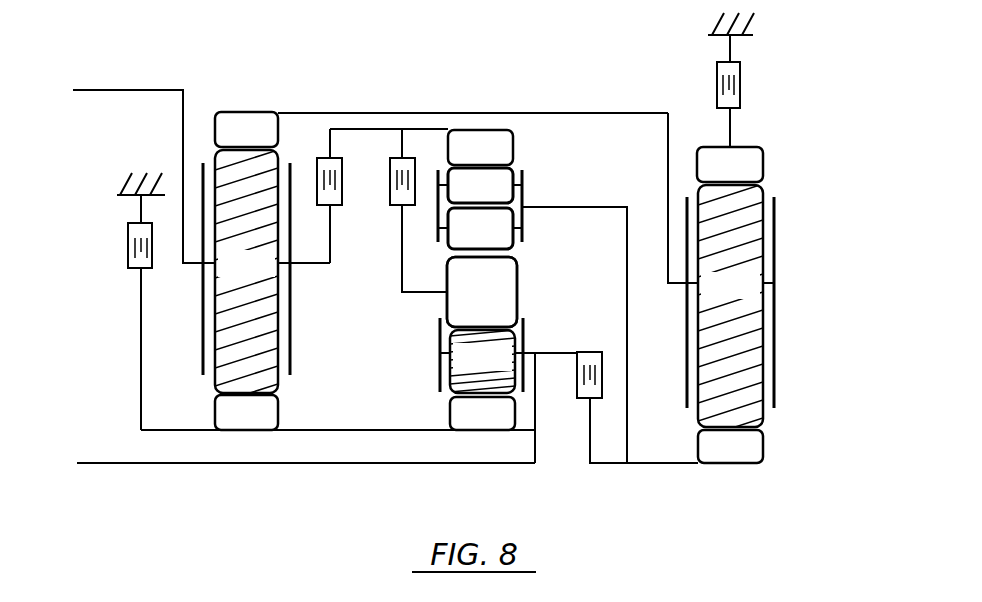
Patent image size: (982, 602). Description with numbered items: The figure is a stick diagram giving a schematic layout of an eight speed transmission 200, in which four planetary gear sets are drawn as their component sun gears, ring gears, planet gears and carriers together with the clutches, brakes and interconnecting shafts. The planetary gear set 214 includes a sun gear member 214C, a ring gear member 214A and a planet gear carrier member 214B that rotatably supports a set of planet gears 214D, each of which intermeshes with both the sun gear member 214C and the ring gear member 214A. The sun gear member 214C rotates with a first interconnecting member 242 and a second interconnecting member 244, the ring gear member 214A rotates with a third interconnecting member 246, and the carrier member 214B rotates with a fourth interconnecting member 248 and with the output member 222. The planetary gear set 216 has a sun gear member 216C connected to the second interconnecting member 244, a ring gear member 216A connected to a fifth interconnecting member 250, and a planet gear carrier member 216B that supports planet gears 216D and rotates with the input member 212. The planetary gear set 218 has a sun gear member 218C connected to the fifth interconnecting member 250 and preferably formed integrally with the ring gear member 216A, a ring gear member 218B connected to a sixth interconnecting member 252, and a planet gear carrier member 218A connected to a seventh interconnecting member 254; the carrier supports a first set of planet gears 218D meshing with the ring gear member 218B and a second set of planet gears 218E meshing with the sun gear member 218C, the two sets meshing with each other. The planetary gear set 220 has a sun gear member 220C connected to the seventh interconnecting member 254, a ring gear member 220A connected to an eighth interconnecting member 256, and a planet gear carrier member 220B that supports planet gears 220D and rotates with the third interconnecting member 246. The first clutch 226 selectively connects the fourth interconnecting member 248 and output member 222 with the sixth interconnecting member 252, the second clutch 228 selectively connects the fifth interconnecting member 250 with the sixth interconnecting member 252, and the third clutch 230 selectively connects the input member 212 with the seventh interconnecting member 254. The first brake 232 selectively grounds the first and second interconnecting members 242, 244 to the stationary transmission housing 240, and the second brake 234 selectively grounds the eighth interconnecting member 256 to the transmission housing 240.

The eight speed transmission 200 is at (560, 100).
The input member 212 is at (153, 464).
The planetary gear set 214 is at (286, 234).
The ring gear member 214A is at (222, 141).
The planet gear carrier member 214B is at (292, 372).
The sun gear member 214C is at (222, 424).
The planet gears 214D is at (222, 275).
The planetary gear set 216 is at (479, 409).
The ring gear member 216A is at (510, 318).
The planet gear carrier member 216B is at (438, 368).
The sun gear member 216C is at (458, 425).
The planet gears 216D is at (458, 369).
The planetary gear set 218 is at (520, 187).
The planet gear carrier member 218A is at (524, 172).
The ring gear member 218B is at (505, 159).
The sun gear member 218C is at (510, 288).
The first set of planet gears 218D is at (505, 197).
The second set of planet gears 218E is at (505, 240).
The planetary gear set 220 is at (764, 288).
The ring gear member 220A is at (704, 176).
The planet gear carrier member 220B is at (778, 317).
The sun gear member 220C is at (704, 458).
The planet gears 220D is at (704, 297).
The output member 222 is at (150, 90).
The first clutch 226 is at (334, 206).
The second clutch 228 is at (392, 178).
The third clutch 230 is at (578, 398).
The first brake 232 is at (128, 258).
The second brake 234 is at (717, 90).
The transmission housing 240 is at (130, 192).
The first interconnecting member 242 is at (140, 310).
The second interconnecting member 244 is at (308, 431).
The third interconnecting member 246 is at (394, 112).
The fourth interconnecting member 248 is at (300, 268).
The fifth interconnecting member 250 is at (430, 292).
The sixth interconnecting member 252 is at (362, 129).
The seventh interconnecting member 254 is at (645, 463).
The eighth interconnecting member 256 is at (732, 130).